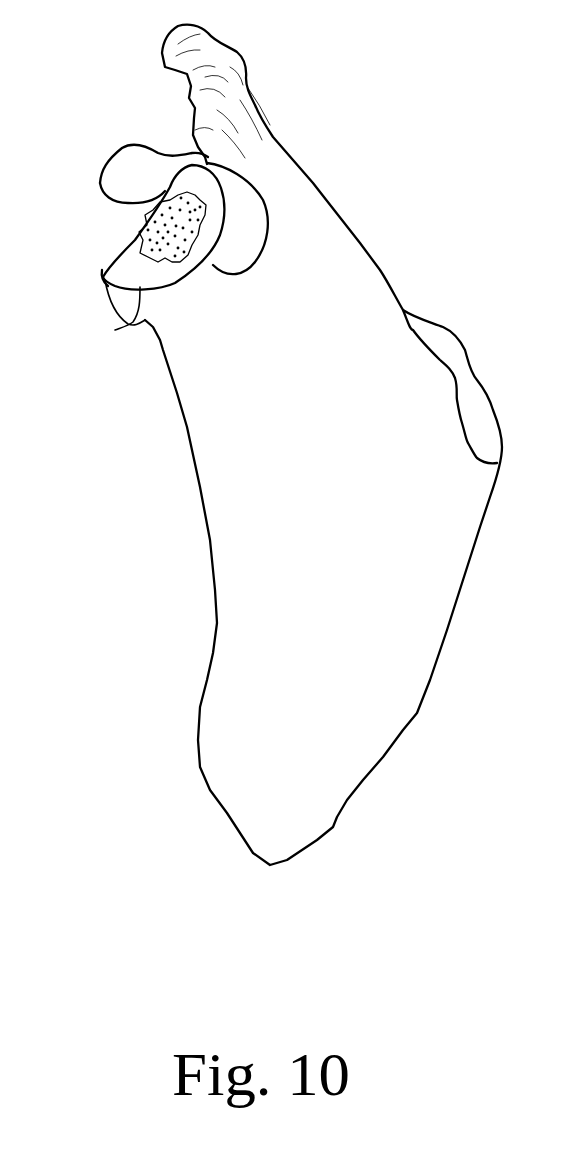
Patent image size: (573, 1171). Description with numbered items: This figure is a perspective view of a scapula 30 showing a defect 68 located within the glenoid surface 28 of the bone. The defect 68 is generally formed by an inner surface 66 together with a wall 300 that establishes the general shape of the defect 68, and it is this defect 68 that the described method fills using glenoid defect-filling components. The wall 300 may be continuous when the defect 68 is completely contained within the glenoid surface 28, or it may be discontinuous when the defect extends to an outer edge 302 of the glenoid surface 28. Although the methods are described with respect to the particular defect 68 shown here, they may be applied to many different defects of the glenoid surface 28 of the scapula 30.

The scapula 30 is at (367, 330).
The inner surface 66 is at (140, 235).
The defect 68 is at (191, 172).
The glenoid surface 28 is at (105, 276).
The wall 300 is at (100, 183).
The outer edge 302 is at (115, 330).